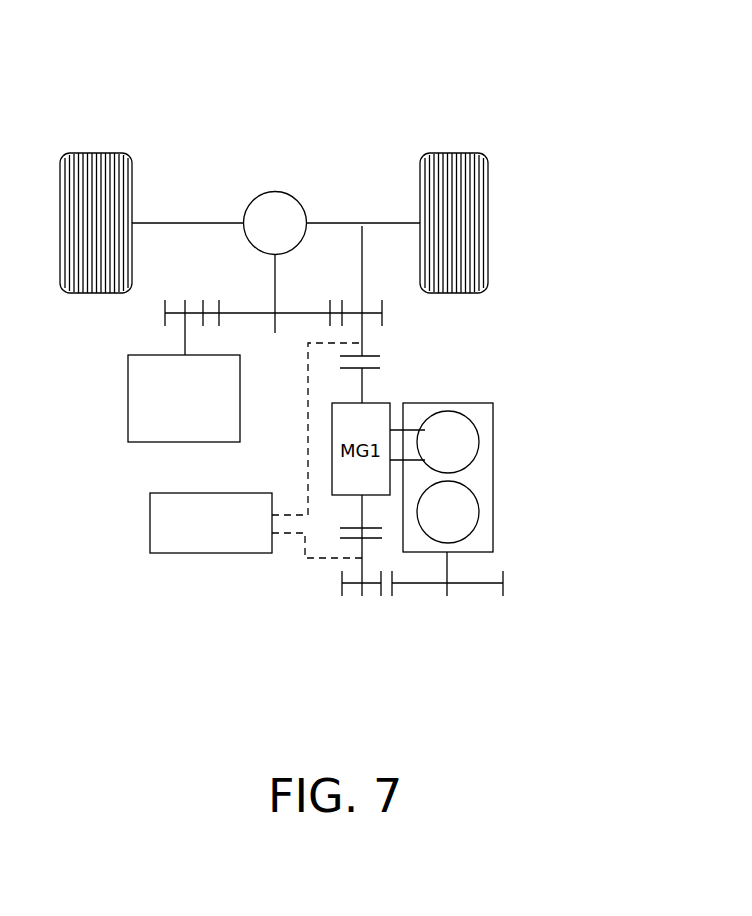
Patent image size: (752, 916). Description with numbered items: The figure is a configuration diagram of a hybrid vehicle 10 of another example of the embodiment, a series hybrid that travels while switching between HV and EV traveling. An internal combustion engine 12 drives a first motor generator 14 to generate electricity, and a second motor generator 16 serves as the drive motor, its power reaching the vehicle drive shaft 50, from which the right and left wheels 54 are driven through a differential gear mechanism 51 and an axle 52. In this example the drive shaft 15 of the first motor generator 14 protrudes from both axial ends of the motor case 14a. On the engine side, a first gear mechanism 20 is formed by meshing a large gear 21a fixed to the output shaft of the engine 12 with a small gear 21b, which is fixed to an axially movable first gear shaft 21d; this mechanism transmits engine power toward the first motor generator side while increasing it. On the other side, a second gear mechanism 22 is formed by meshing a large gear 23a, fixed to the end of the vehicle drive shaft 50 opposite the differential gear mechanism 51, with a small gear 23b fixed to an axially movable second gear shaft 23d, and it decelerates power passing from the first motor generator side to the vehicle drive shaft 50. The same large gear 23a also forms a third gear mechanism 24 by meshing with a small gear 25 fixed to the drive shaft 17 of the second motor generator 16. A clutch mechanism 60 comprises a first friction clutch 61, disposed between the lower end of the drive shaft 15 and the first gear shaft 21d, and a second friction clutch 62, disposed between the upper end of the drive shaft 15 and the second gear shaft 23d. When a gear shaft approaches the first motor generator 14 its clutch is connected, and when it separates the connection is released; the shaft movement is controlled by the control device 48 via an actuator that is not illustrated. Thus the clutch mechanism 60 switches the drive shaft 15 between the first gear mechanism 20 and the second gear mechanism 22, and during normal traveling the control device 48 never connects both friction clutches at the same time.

The hybrid vehicle 10 is at (352, 100).
The internal combustion engine 12 is at (494, 468).
The first motor generator 14 is at (425, 432).
The motor case 14a is at (425, 460).
The drive shaft 15 is at (363, 385).
The second motor generator 16 is at (128, 403).
The drive shaft 17 is at (182, 336).
The first gear mechanism 20 is at (475, 585).
The large gear 21a is at (494, 577).
The small gear 21b is at (373, 586).
The first gear shaft 21d is at (360, 568).
The second gear mechanism 22 is at (377, 308).
The large gear 23a is at (252, 315).
The small gear 23b is at (357, 300).
The second gear shaft 23d is at (365, 338).
The third gear mechanism 24 is at (174, 312).
The small gear 25 is at (200, 312).
The control device 48 is at (183, 554).
The vehicle drive shaft 50 is at (277, 272).
The differential gear mechanism 51 is at (288, 193).
The axle 52 is at (178, 222).
The wheels 54 is at (96, 153).
The clutch mechanism 60 is at (277, 410).
The first friction clutch 61 is at (348, 526).
The second friction clutch 62 is at (352, 370).